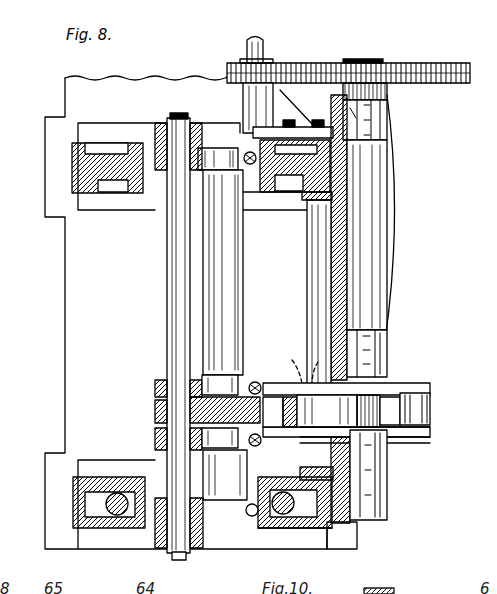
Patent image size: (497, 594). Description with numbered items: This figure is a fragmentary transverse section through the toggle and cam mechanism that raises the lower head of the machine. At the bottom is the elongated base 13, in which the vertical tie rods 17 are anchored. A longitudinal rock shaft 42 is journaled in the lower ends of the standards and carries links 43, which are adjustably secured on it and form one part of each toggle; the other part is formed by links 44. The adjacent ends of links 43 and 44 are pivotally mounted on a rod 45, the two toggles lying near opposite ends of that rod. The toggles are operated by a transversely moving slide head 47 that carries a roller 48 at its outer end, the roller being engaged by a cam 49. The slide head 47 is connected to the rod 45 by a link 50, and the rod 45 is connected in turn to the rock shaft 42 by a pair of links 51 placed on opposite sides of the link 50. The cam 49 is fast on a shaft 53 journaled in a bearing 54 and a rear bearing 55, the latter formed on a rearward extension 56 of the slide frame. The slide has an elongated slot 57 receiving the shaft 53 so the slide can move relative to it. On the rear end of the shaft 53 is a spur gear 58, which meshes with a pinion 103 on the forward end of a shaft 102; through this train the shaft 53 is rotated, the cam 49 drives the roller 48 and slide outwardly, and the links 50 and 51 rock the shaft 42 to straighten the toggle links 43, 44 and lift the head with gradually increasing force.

The base 13 is at (82, 333).
The vertical tie rods 17 is at (115, 515).
The rock shaft 42 is at (221, 316).
The links 43 is at (155, 195).
The links 44 is at (156, 122).
The rod 45 is at (167, 308).
The slide head 47 is at (427, 443).
The roller 48 is at (432, 413).
The cam 49 is at (382, 388).
The link 50 is at (155, 410).
The links 51 is at (155, 383).
The shaft 53 is at (363, 260).
The bearing 54 is at (386, 493).
The rear bearing 55 is at (389, 124).
The rearward extension 56 is at (335, 257).
The elongated slot 57 is at (298, 366).
The spur gear 58 is at (446, 63).
The shaft 102 is at (248, 44).
The pinion 103 is at (274, 60).